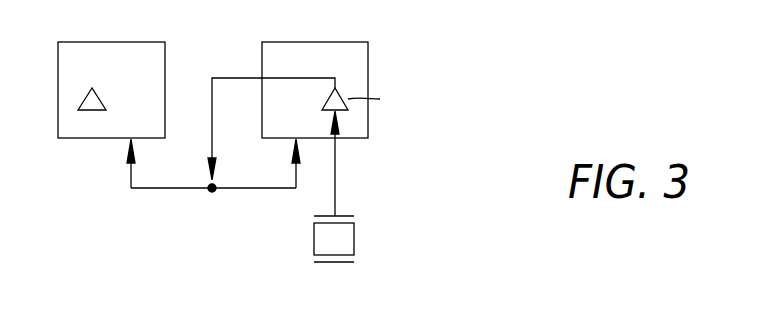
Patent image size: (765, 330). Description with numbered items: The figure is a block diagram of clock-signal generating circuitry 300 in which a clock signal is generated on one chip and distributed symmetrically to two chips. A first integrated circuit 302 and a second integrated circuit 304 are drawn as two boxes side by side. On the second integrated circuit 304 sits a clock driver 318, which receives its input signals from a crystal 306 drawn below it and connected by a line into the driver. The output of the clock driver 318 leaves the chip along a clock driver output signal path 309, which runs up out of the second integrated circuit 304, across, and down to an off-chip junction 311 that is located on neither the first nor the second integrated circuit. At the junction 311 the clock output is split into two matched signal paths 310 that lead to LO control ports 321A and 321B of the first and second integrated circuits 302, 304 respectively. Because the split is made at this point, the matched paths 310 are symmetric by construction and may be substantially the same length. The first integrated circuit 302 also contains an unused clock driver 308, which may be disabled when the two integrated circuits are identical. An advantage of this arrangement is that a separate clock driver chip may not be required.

The clock-signal generating circuitry 300 is at (491, 56).
The first integrated circuit 302 is at (140, 42).
The second integrated circuit 304 is at (345, 42).
The crystal 306 is at (367, 196).
The unused clock driver 308 is at (108, 100).
The clock driver output signal path 309 is at (229, 76).
The matched signal paths 310 is at (153, 189).
The off-chip junction 311 is at (212, 193).
The clock driver 318 is at (320, 99).
The LO control port 321A is at (129, 146).
The LO control port 321B is at (293, 145).